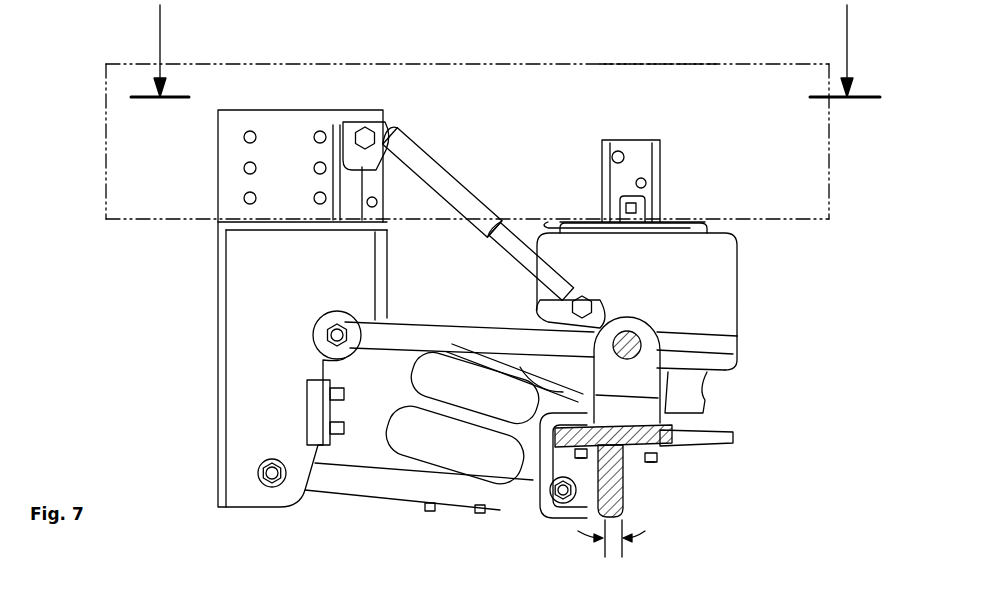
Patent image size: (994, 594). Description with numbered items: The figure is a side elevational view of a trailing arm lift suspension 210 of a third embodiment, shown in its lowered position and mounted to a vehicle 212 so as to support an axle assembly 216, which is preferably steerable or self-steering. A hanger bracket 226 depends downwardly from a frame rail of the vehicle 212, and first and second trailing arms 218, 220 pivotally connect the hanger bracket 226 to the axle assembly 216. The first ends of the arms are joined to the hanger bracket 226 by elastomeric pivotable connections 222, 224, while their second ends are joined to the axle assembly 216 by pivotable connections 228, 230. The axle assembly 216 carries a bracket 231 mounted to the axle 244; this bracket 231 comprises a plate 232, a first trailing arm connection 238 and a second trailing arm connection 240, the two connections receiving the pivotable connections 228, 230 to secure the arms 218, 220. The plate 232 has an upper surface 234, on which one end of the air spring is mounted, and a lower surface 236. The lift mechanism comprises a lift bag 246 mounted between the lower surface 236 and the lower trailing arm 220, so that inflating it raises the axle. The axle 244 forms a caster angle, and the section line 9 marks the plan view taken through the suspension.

The section line 9- 9 is at (505, 51).
The lift suspension 210 is at (609, 40).
The vehicle 212 is at (730, 59).
The axle assembly 216 is at (685, 465).
The first trailing arm 218 is at (407, 333).
The second trailing arm 220 is at (380, 487).
The pivotable connection 222 is at (648, 333).
The pivotable connection 224 is at (334, 321).
The hanger bracket 226 is at (210, 365).
The pivotable connection 228 is at (265, 488).
The pivotable connection 230 is at (547, 513).
The bracket 231 is at (690, 418).
The plate 232 is at (540, 372).
The upper surface 234 is at (474, 350).
The lower surface 236 is at (470, 368).
The first trailing arm connection 238 is at (662, 350).
The second trailing arm connection 240 is at (545, 480).
The axle 244 is at (625, 498).
The lift bag 246 is at (385, 445).